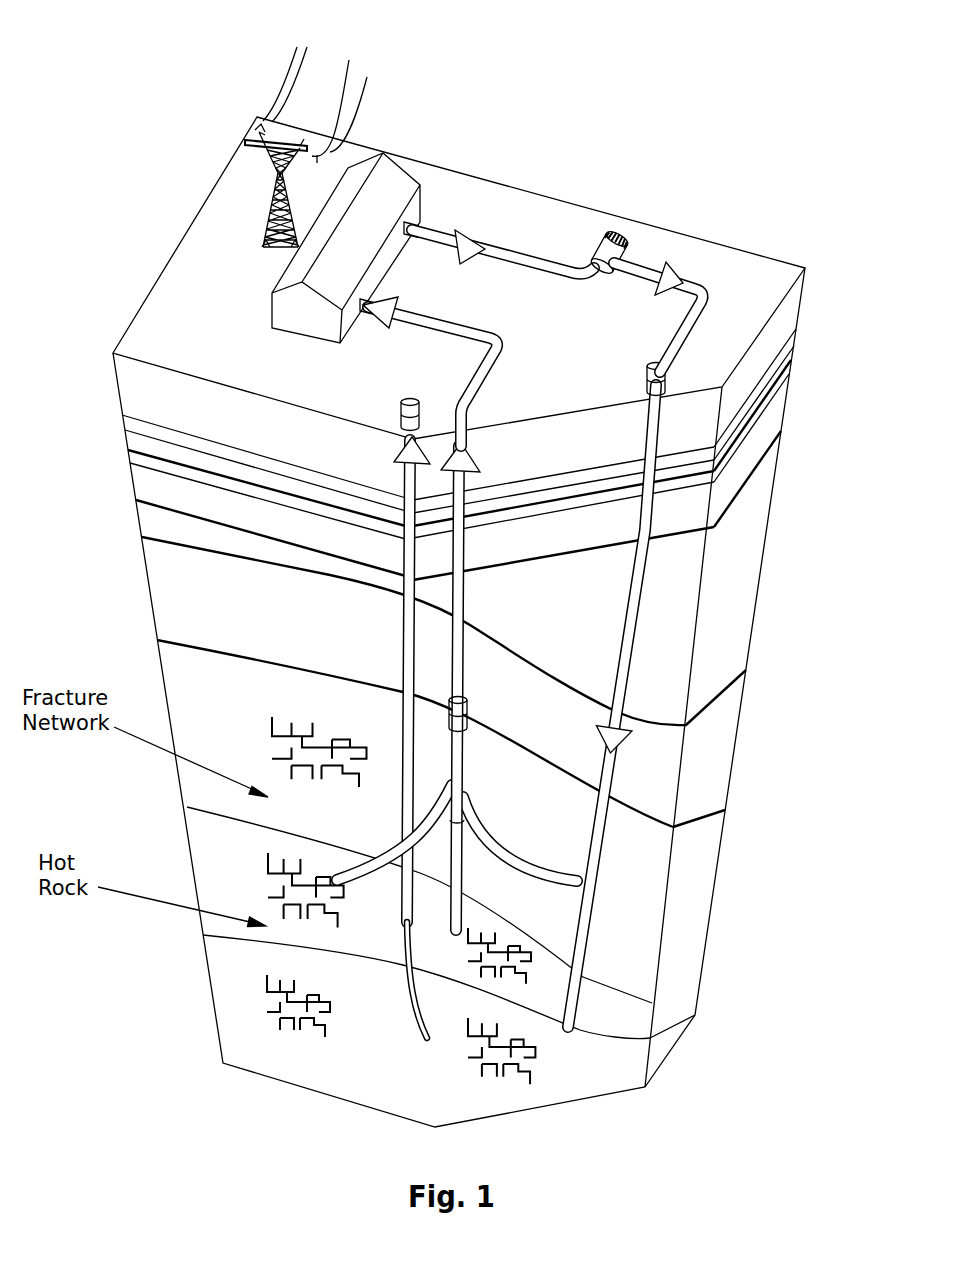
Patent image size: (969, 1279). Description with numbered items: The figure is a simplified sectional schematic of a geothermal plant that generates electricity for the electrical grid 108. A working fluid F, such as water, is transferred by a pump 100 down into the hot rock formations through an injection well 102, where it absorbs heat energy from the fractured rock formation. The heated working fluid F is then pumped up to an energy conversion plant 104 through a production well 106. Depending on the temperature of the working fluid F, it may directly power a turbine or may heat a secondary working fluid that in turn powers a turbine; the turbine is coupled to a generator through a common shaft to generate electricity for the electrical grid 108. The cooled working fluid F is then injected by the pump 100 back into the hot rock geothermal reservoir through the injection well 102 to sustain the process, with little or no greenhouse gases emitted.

The pump 100 is at (622, 228).
The injection well 102 is at (650, 600).
The energy conversion plant 104 is at (392, 192).
The production well 106 is at (452, 663).
The electrical grid 108 is at (348, 68).
The working fluid F is at (677, 283).